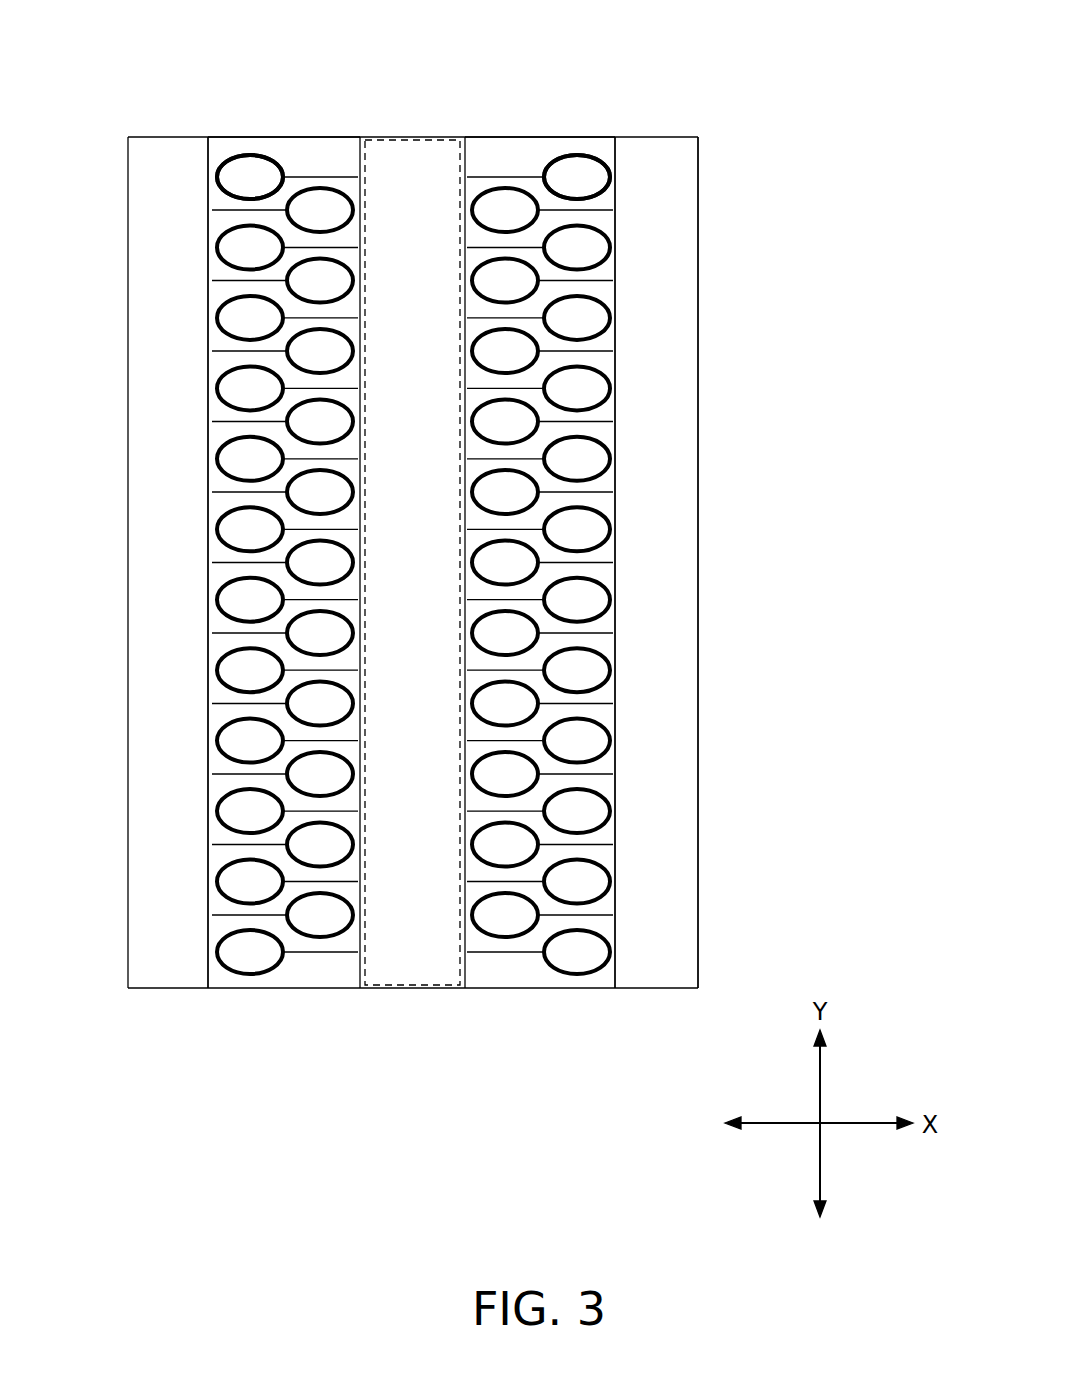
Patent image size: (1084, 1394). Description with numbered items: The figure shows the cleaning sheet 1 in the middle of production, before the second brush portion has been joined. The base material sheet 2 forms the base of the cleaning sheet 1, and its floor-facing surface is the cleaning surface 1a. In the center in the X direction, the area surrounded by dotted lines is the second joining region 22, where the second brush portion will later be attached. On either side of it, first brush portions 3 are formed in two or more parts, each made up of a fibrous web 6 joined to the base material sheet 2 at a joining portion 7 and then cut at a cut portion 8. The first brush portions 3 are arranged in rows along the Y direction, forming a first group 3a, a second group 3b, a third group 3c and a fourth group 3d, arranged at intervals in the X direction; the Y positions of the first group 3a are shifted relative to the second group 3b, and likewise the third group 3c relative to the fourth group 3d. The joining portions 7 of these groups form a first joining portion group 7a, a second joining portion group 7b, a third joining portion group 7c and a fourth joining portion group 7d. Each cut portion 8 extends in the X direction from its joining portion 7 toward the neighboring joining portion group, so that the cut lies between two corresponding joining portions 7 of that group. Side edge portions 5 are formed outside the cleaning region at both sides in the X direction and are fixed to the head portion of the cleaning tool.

The cleaning sheet 1 is at (731, 106).
The cleaning surface 1a is at (693, 285).
The base material sheet 2 is at (657, 143).
The first brush portion 3 is at (204, 152).
The first group of the first brush portions 3a is at (224, 529).
The second group of the first brush portions 3b is at (310, 526).
The third group of the first brush portions 3c is at (495, 533).
The fourth group of the first brush portions 3d is at (564, 555).
The side edge portion 5 is at (150, 445).
The fibrous web 6 is at (292, 152).
The joining portion 7 is at (245, 168).
The first joining portion group 7a is at (225, 986).
The second joining portion group 7b is at (318, 958).
The third joining portion group 7c is at (492, 960).
The fourth joining portion group 7d is at (559, 996).
The cut portion 8 is at (338, 172).
The second joining region 22 is at (404, 150).